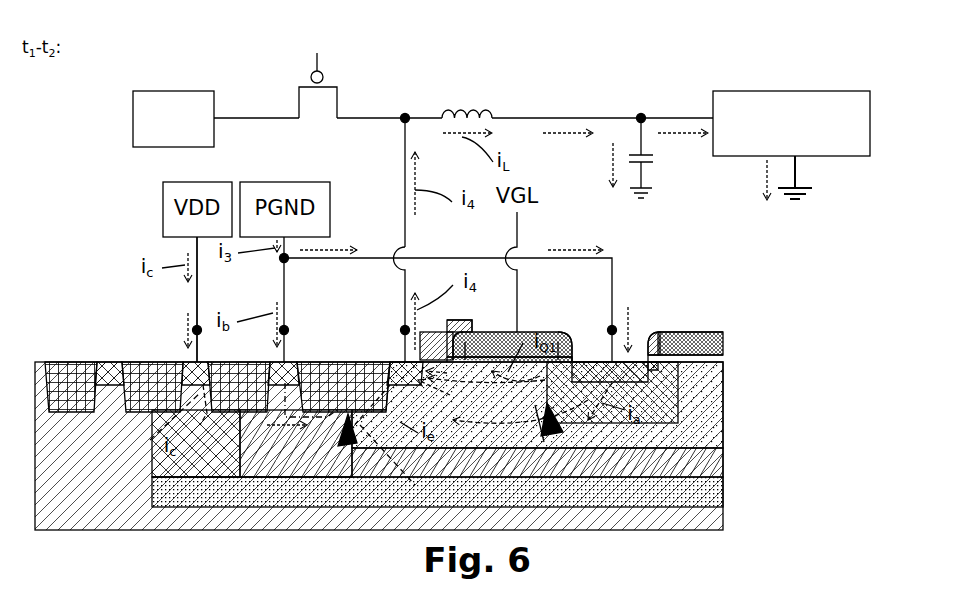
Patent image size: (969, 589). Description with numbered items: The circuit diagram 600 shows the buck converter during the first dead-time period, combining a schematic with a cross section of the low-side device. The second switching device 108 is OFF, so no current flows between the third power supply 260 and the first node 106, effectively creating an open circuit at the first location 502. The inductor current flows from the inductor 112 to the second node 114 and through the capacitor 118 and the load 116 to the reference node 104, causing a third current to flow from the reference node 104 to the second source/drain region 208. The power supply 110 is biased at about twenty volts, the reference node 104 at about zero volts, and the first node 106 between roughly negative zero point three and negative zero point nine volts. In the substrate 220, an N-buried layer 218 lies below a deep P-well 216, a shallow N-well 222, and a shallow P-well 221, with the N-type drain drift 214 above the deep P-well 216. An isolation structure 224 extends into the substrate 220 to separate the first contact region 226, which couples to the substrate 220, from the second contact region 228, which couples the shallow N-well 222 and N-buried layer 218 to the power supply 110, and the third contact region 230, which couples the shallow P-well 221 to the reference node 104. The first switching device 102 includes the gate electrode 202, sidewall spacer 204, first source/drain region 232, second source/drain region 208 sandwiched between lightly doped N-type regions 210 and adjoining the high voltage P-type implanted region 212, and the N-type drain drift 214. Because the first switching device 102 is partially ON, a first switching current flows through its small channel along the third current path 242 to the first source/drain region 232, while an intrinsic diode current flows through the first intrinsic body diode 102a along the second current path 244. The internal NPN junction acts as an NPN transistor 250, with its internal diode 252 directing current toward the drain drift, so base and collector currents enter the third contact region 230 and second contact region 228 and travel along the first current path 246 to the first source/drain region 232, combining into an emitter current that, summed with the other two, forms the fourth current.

The circuit diagram 600 is at (890, 58).
The third power supply 260 is at (133, 121).
The second switching device 108 is at (295, 73).
The first node 106 is at (405, 113).
The first location 502 is at (375, 125).
The inductor 112 is at (467, 110).
The second node 114 is at (641, 113).
The capacitor 118 is at (653, 163).
The reference node 104 is at (645, 198).
The load 116 is at (847, 150).
The power supply 110 is at (193, 328).
The second contact region 228 is at (187, 360).
The third contact region 230 is at (282, 360).
The first source/drain region 232 is at (400, 360).
The gate electrode 202 is at (510, 337).
The sidewall spacer 204 is at (635, 287).
The first switching device 102 is at (567, 312).
The first intrinsic body diode 102a is at (560, 423).
The isolation structure 224 is at (75, 370).
The first contact region 226 is at (112, 383).
The first current path 246 is at (150, 440).
The shallow N-well 222 is at (168, 462).
The NPN transistor 250 is at (295, 443).
The internal diode 252 is at (340, 446).
The shallow P-well 221 is at (253, 472).
The second source/drain region 208 is at (622, 382).
The lightly doped N-type regions 210 is at (657, 367).
The high voltage P-type implanted region 212 is at (668, 407).
The N-type drain drift 214 is at (718, 435).
The deep P-well 216 is at (718, 462).
The N-buried layer 218 is at (718, 490).
The substrate 220 is at (718, 517).
The third current path 242 is at (500, 405).
The second current path 244 is at (520, 425).